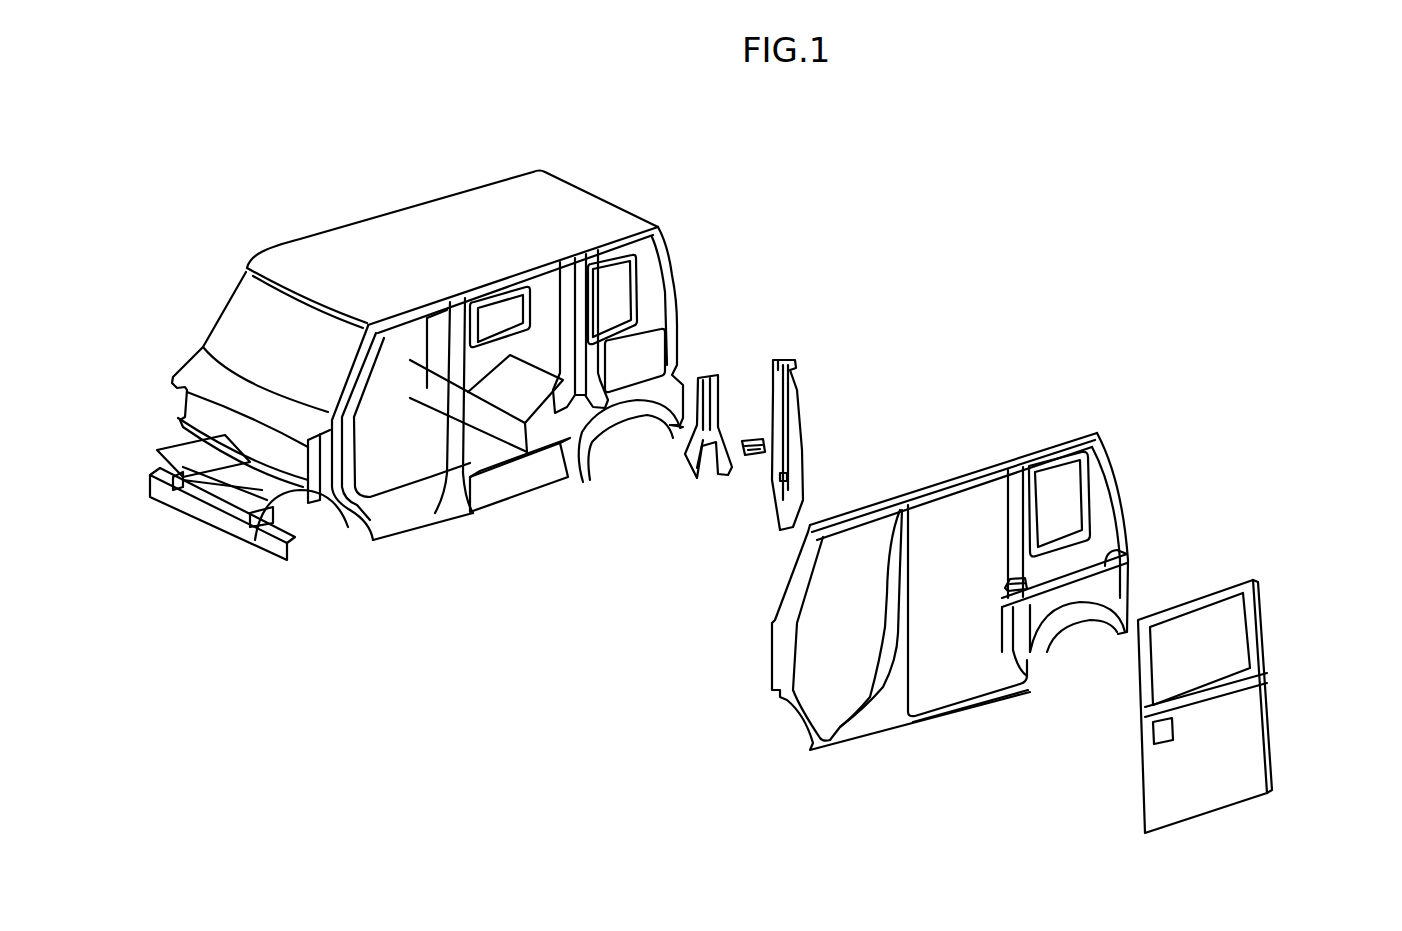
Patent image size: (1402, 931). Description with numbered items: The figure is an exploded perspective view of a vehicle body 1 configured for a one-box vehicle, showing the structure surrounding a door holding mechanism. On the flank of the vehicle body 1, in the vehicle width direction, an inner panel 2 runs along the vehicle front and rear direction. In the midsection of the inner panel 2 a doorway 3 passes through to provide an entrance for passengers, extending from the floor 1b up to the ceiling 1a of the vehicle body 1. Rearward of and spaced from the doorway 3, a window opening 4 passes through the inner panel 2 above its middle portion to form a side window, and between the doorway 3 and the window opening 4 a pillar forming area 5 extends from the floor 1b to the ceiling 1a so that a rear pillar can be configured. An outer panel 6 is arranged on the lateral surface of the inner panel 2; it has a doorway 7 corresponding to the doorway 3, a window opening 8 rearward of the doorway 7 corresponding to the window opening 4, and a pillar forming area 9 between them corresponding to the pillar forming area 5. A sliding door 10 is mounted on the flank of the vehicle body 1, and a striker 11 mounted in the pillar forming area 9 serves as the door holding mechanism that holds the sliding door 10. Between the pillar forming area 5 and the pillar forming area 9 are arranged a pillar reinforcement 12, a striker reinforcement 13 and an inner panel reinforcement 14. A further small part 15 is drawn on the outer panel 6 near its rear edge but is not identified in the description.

The vehicle body 1 is at (653, 198).
The ceiling 1a is at (370, 238).
The floor 1b is at (522, 488).
The inner panel 2 is at (684, 263).
The doorway 3 is at (505, 298).
The window opening 4 is at (633, 303).
The pillar forming area 5 is at (585, 314).
The outer panel 6 is at (1130, 447).
The doorway 7 is at (936, 505).
The window opening 8 is at (1068, 497).
The pillar forming area 9 is at (1017, 527).
The sliding door 10 is at (1283, 617).
The striker 11 is at (1007, 583).
The pillar reinforcement 12 is at (811, 417).
The striker reinforcement 13 is at (753, 456).
The inner panel reinforcement 14 is at (667, 460).
The rail bracket 15 is at (1128, 552).